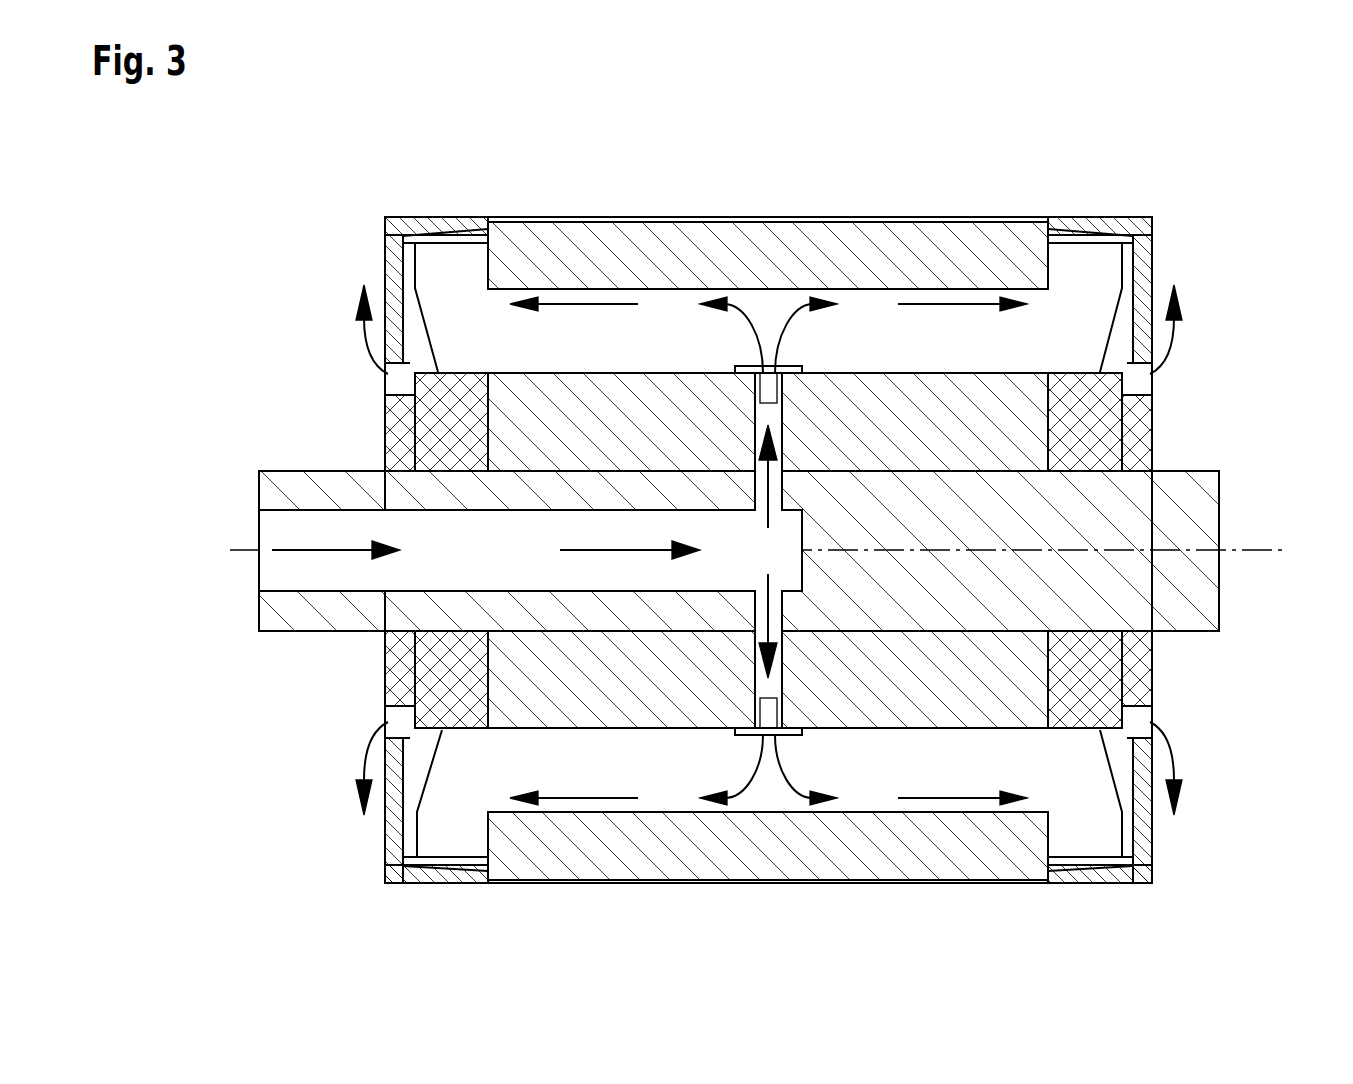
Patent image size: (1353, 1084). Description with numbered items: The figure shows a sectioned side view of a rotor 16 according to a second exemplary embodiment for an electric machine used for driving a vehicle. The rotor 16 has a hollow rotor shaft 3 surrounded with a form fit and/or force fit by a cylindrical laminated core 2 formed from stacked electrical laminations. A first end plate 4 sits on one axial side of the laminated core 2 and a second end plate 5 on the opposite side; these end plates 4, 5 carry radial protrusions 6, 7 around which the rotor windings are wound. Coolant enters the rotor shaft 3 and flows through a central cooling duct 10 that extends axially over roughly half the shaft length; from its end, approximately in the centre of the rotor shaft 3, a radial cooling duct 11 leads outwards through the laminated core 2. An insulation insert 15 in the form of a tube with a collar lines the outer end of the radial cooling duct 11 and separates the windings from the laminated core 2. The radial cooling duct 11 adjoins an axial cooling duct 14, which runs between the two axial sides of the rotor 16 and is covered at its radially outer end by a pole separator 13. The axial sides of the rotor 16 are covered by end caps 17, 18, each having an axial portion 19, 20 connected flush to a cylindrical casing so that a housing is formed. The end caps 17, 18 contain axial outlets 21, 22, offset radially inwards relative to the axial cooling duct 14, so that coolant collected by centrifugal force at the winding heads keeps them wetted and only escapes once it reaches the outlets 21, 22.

The laminated core 2 is at (533, 453).
The rotor shaft 3 is at (275, 615).
The first end plate 4 is at (458, 410).
The second end plate 5 is at (1082, 410).
The radial protrusion 6 is at (418, 228).
The radial protrusion 7 is at (1112, 226).
The central cooling duct 10 is at (408, 532).
The radial cooling duct 11 is at (1100, 508).
The pole separator 13 is at (870, 265).
The axial cooling duct 14 is at (665, 297).
The insulation insert 15 is at (775, 418).
The rotor 16 is at (313, 904).
The end cap 17 is at (385, 240).
The end cap 18 is at (1153, 240).
The axial portion 19 is at (470, 235).
The axial portion 20 is at (542, 222).
The axial outlet 21 is at (388, 384).
The axial outlet 22 is at (1142, 383).